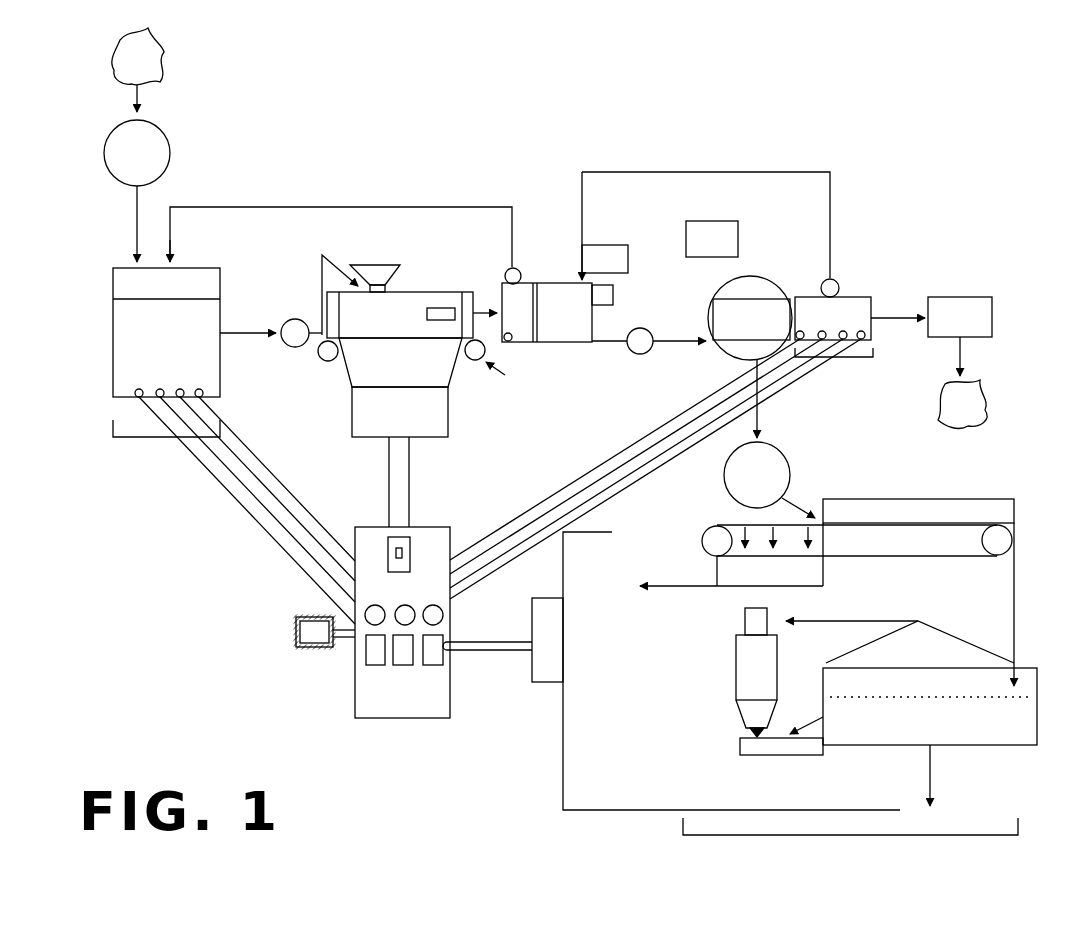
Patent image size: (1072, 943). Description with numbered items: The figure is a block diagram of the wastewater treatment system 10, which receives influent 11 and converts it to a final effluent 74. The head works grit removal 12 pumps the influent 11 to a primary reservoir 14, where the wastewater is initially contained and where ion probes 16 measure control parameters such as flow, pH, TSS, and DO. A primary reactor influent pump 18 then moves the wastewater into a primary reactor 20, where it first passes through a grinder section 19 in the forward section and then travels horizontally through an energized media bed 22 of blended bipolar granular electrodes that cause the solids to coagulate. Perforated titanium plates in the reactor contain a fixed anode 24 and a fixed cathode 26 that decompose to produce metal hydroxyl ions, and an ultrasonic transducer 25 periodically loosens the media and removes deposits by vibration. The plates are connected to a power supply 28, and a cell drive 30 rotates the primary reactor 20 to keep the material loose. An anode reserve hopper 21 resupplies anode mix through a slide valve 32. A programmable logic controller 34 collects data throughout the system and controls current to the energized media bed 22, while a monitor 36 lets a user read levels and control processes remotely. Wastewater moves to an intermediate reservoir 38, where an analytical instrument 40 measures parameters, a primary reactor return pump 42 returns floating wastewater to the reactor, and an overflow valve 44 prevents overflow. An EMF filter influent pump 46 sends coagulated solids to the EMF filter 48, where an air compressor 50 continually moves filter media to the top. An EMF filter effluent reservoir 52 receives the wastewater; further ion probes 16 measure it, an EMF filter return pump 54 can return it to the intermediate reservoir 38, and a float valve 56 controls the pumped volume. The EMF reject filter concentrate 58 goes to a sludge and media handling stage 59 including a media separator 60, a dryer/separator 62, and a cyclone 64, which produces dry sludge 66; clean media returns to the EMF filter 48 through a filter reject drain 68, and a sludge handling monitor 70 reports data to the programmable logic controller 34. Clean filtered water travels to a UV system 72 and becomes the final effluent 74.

The wastewater treatment system 10 is at (925, 236).
The influent 11 is at (138, 70).
The head works grit removal 12 is at (137, 191).
The primary reservoir 14 is at (194, 332).
The ion probes 16 is at (165, 440).
The primary reactor influent pump 18 is at (290, 320).
The grinder section 19 is at (335, 298).
The primary reactor 20 is at (412, 284).
The anode reserve hopper 21 is at (372, 266).
The energized media bed 22 is at (412, 315).
The fixed anode 24 is at (320, 364).
The ultrasonic transducer 25 is at (443, 322).
The fixed cathode 26 is at (486, 350).
The power supply 28 is at (400, 457).
The cell drive 30 is at (400, 362).
The slide valve 32 is at (380, 290).
The programmable logic controller 34 is at (402, 622).
The monitor 36 is at (305, 648).
The intermediate reservoir 38 is at (540, 312).
The analytical instrument 40 is at (512, 340).
The primary reactor return pump 42 is at (517, 268).
The overflow valve 44 is at (614, 297).
The EMF filter influent pump 46 is at (648, 350).
The EMF filter 48 is at (750, 312).
The air compressor 50 is at (731, 288).
The EMF filter effluent reservoir 52 is at (860, 318).
The EMF filter return pump 54 is at (840, 283).
The float valve 56 is at (605, 246).
The EMF reject filter concentrate 58 is at (769, 439).
The sludge and media handling stage 59 is at (851, 835).
The media separator 60 is at (914, 522).
The dryer/separator 62 is at (913, 737).
The cyclone 64 is at (736, 668).
The dry sludge 66 is at (785, 752).
The filter reject drain 68 is at (800, 565).
The sludge handling monitor 70 is at (532, 616).
The UV system 72 is at (960, 336).
The final effluent 74 is at (962, 404).